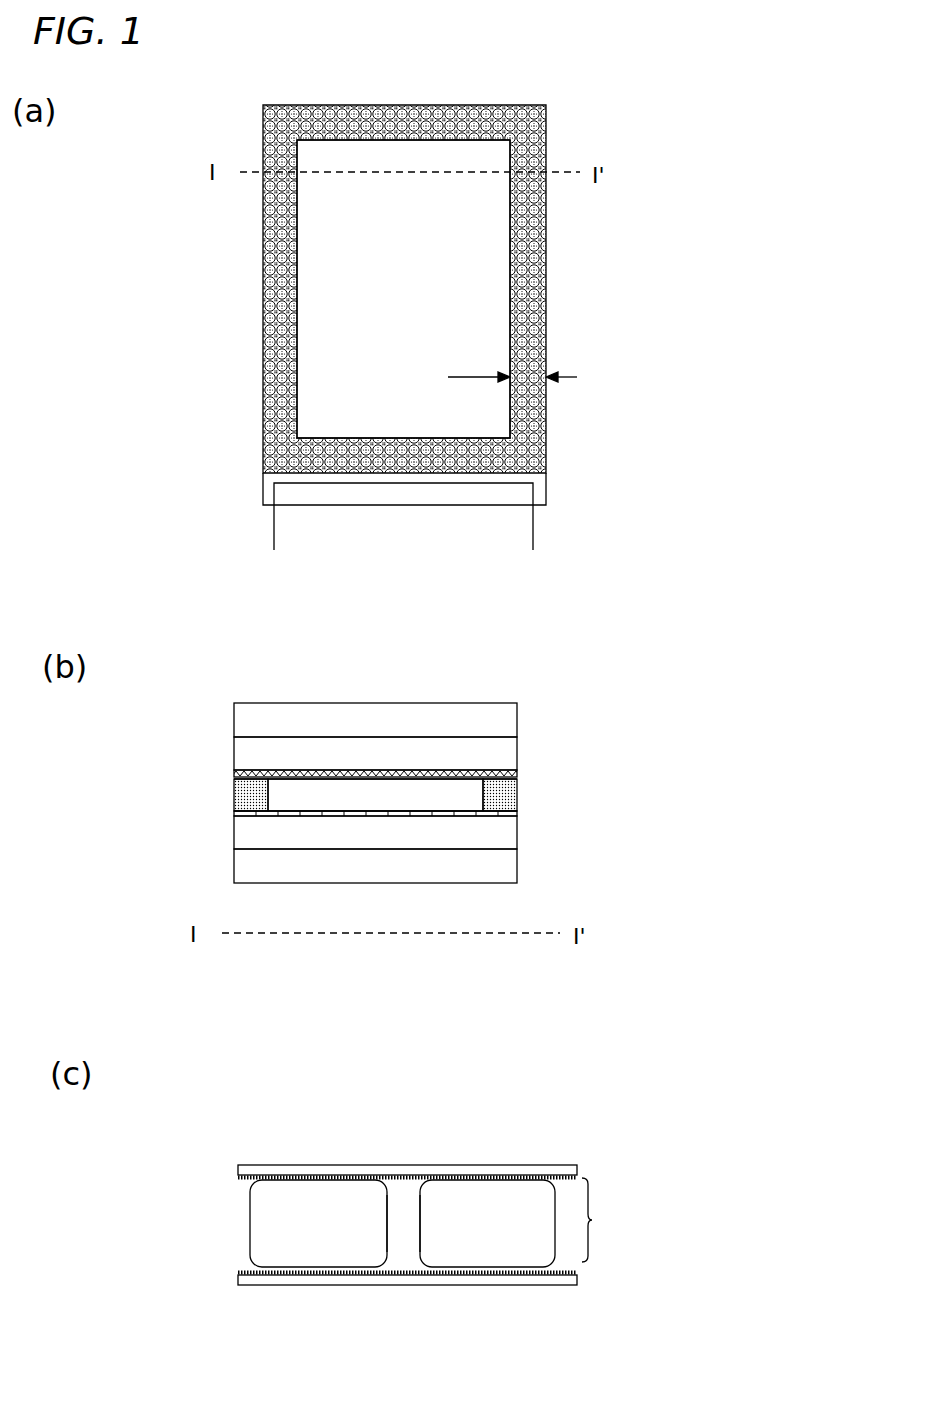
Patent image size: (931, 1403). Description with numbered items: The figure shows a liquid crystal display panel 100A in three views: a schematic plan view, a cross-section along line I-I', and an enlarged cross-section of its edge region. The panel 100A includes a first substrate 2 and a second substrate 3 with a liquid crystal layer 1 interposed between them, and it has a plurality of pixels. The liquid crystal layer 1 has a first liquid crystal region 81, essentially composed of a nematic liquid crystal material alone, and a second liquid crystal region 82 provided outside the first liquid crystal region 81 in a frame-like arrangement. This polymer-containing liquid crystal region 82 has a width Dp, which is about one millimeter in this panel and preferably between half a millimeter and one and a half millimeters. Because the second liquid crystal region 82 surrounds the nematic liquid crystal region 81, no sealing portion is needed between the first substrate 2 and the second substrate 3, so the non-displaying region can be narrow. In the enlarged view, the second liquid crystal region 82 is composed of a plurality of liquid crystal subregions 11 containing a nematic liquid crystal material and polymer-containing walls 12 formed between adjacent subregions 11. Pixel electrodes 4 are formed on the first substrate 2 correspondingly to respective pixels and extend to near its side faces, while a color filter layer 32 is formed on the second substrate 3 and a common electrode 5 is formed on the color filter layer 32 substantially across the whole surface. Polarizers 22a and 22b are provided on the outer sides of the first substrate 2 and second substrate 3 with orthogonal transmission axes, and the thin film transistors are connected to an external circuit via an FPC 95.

The liquid crystal display panel 100A is at (608, 130).
The second liquid crystal region 82 is at (270, 227).
The first liquid crystal region 81 is at (317, 372).
The FPC 95 is at (307, 527).
The width of the polymer-containing liquid crystal region Dp is at (532, 377).
The polarizer 22b is at (506, 715).
The second substrate 3 is at (500, 757).
The color filter layer 32 is at (520, 773).
The common electrode 5 is at (403, 782).
The liquid crystal layer 1 is at (524, 780).
The pixel electrodes 4 is at (388, 814).
The first substrate 2 is at (506, 838).
The polarizer 22a is at (506, 870).
The liquid crystal subregions 11 is at (477, 1250).
The polymer-containing walls 12 is at (397, 1227).